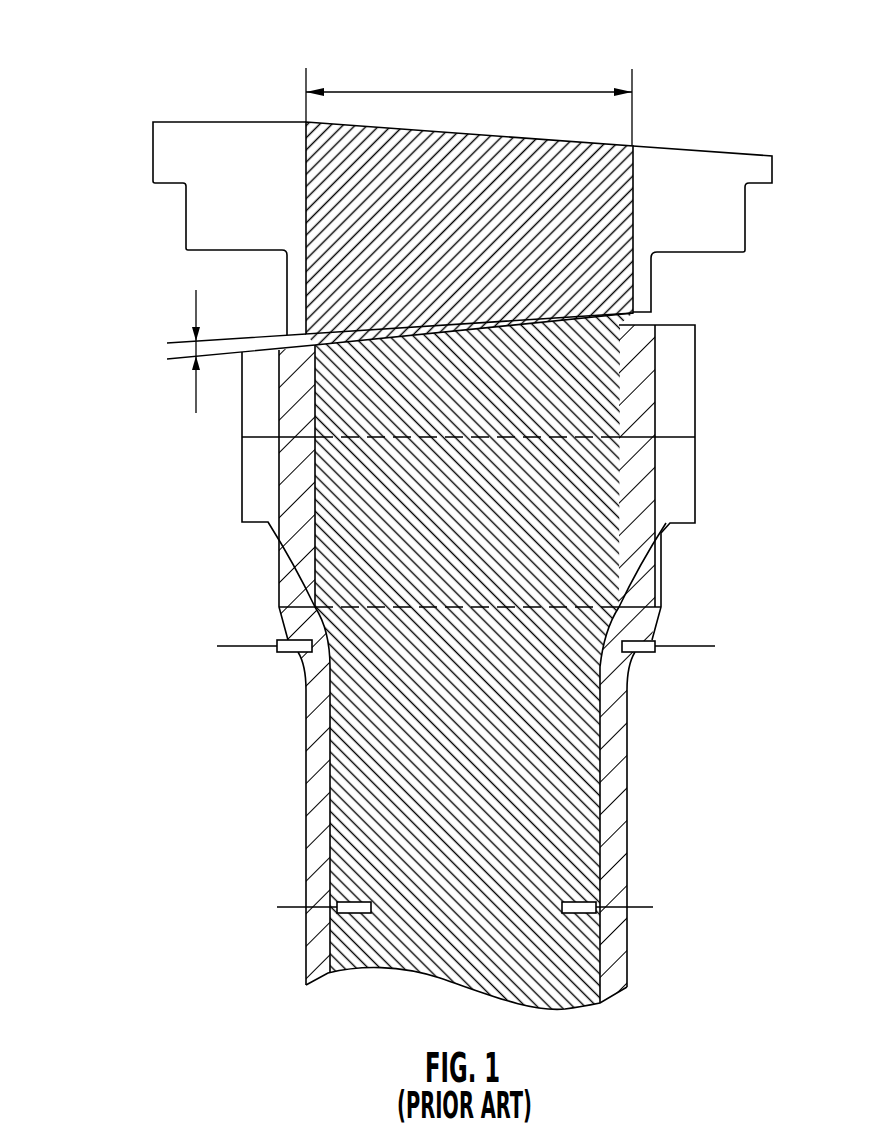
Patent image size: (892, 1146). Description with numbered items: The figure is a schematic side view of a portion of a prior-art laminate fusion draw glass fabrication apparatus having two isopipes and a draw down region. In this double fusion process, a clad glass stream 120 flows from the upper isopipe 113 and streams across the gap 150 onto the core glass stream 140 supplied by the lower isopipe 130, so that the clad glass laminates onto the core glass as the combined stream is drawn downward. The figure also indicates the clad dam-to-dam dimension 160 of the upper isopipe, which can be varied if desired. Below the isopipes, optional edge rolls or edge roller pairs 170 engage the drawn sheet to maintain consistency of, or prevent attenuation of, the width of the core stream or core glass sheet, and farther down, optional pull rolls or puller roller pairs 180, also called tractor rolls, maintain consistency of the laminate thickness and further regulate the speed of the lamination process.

The upper isopipe 113 is at (171, 152).
The clad glass stream 120 is at (591, 143).
The lower isopipe 130 is at (256, 466).
The core glass stream 140 is at (642, 371).
The gap 150 is at (178, 344).
The clad dam-to-dam dimension 160 is at (499, 91).
The edge rolls 170 is at (270, 654).
The pull rolls 180 is at (290, 908).